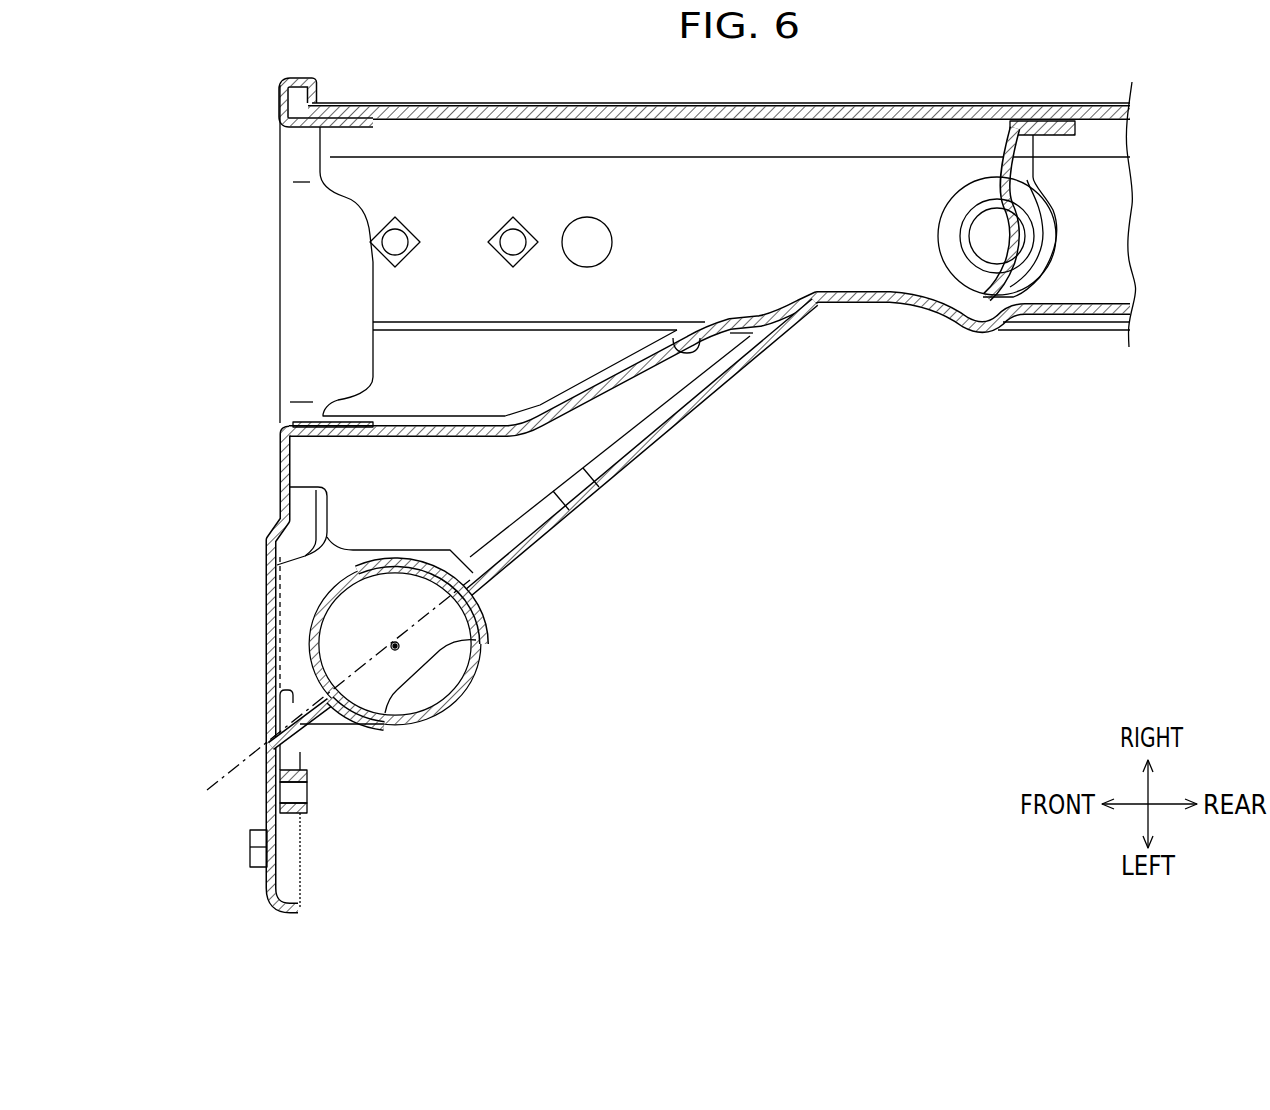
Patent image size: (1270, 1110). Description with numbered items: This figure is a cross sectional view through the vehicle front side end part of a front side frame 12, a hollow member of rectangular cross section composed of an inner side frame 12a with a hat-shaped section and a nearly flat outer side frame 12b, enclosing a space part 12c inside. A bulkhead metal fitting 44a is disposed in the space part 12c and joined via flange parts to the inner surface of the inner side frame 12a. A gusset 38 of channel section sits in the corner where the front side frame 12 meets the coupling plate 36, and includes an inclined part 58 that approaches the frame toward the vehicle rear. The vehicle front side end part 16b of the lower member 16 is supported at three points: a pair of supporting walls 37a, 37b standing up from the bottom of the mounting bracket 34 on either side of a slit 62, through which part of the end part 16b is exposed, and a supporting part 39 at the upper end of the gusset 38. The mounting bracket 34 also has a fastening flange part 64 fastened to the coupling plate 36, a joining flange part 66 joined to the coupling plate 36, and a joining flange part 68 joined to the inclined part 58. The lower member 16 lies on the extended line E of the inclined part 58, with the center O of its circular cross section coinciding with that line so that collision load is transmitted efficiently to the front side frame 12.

The front side frame 12 is at (708, 264).
The inner side frame 12a is at (497, 103).
The outer side frame 12b is at (620, 389).
The space part 12c is at (797, 233).
The bulkhead metal fitting 44a is at (1000, 147).
The lower member 16 is at (451, 677).
The vehicle front side end part 16b is at (458, 714).
The mounting bracket 34 is at (330, 720).
The coupling plate 36 is at (326, 669).
The supporting wall 37a is at (488, 618).
The supporting wall 37b is at (370, 732).
The gusset 38 is at (638, 450).
The supporting part 39 is at (328, 577).
The inclined part 58 is at (640, 455).
The slit 62 is at (482, 643).
The fastening flange part 64 is at (272, 750).
The joining flange part 66 is at (267, 627).
The joining flange part 68 is at (505, 573).
The center of the circle in cross section of the lower member O is at (486, 647).
The extended line E is at (207, 790).